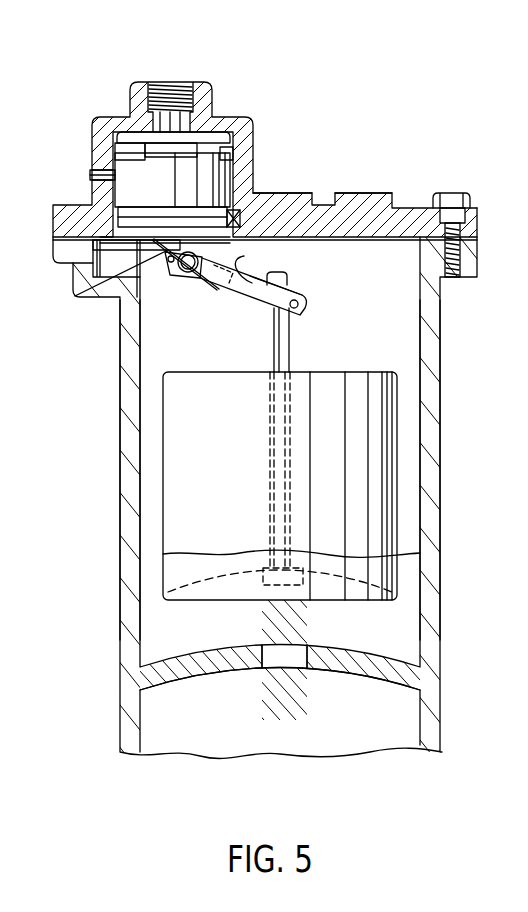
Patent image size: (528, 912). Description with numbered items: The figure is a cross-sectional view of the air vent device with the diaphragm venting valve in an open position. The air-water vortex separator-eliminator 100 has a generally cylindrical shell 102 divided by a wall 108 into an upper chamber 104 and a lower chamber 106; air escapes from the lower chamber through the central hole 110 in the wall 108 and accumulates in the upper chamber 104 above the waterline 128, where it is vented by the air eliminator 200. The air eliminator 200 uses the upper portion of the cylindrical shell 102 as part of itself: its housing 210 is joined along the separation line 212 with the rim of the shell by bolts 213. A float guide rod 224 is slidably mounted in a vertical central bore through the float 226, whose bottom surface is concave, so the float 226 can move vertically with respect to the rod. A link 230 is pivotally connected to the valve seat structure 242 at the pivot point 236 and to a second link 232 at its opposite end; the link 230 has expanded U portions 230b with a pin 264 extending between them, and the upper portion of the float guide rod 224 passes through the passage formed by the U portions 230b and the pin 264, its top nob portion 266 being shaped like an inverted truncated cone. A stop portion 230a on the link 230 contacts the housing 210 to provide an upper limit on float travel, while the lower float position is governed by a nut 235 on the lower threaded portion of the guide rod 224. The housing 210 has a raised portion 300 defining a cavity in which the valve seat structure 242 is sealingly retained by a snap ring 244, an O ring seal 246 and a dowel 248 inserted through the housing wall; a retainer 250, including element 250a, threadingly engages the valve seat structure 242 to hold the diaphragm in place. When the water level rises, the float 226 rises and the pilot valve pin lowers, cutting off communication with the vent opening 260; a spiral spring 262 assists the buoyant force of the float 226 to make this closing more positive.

The air-water vortex separator-eliminator 100 is at (443, 368).
The cylindrical shell 102 is at (433, 485).
The upper chamber 104 is at (153, 352).
The lower chamber 106 is at (158, 715).
The wall 108 is at (222, 678).
The central hole 110 is at (297, 672).
The waterline 128 is at (148, 552).
The air eliminator 200 is at (324, 199).
The housing 210 is at (407, 212).
The separation line 212 is at (478, 250).
The bolts 213 is at (450, 197).
The float guide rod 224 is at (278, 343).
The float 226 is at (177, 552).
The link 230 is at (240, 278).
The stop portion 230a is at (246, 292).
The expanded "U" portion 230b is at (320, 303).
The link 232 is at (75, 294).
The nut 235 is at (270, 590).
The pivot point 236 is at (186, 268).
The valve seat structure 242 is at (98, 243).
The snap ring 244 is at (240, 238).
The "O" ring seal 246 is at (113, 218).
The dowel 248 is at (90, 175).
The retainer 250 is at (220, 155).
The retainer element 250a is at (118, 147).
The vent opening 260 is at (173, 80).
The spiral spring 262 is at (215, 288).
The pin 264 is at (298, 310).
The top nob portion 266 is at (280, 278).
The raised portion 300 is at (253, 162).